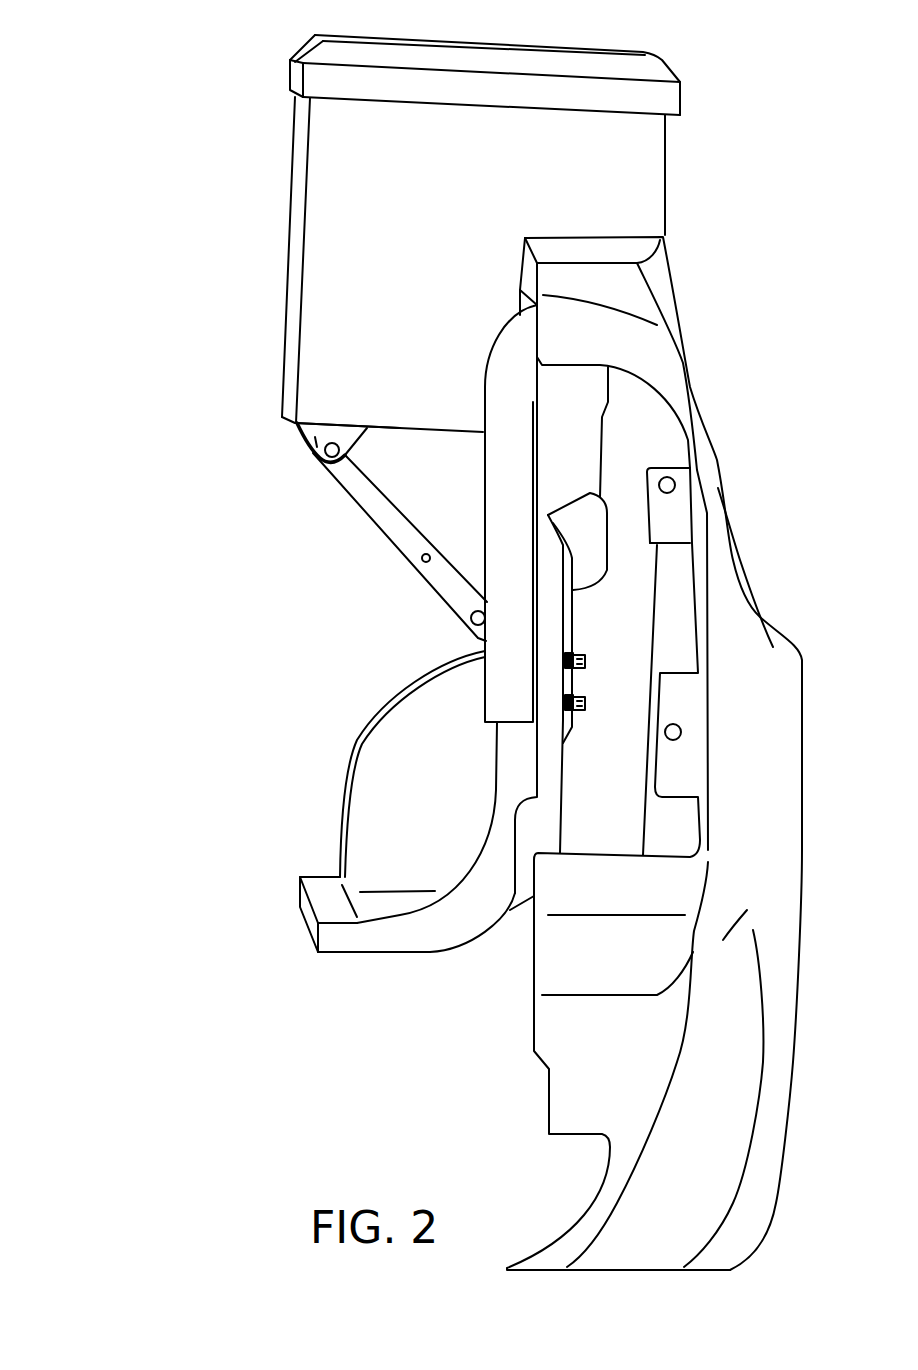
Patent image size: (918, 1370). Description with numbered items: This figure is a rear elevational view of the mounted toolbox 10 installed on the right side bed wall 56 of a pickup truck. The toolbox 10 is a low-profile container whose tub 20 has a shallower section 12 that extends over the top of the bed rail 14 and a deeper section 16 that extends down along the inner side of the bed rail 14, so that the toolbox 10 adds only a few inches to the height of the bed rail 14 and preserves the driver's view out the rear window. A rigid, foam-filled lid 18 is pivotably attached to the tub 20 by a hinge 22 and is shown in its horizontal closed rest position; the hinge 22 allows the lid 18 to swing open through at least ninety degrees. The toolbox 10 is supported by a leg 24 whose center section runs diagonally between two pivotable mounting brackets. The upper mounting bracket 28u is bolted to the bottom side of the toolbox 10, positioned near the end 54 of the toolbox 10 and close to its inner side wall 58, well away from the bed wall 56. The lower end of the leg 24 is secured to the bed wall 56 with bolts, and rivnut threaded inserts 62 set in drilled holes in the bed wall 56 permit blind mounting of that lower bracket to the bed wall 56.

The mounted toolbox 10 is at (188, 104).
The shallower section 12 is at (617, 155).
The bed rail 14 is at (605, 280).
The deeper section 16 is at (333, 348).
The lid 18 is at (642, 73).
The tub 20 is at (632, 130).
The hinge 22 is at (293, 100).
The leg 24 is at (393, 525).
The upper mounting bracket 28u is at (313, 452).
The end of the tool box 54 is at (375, 168).
The bed wall 56 is at (567, 637).
The inner side wall 58 is at (295, 250).
The rivnut threaded insert 62 is at (585, 660).